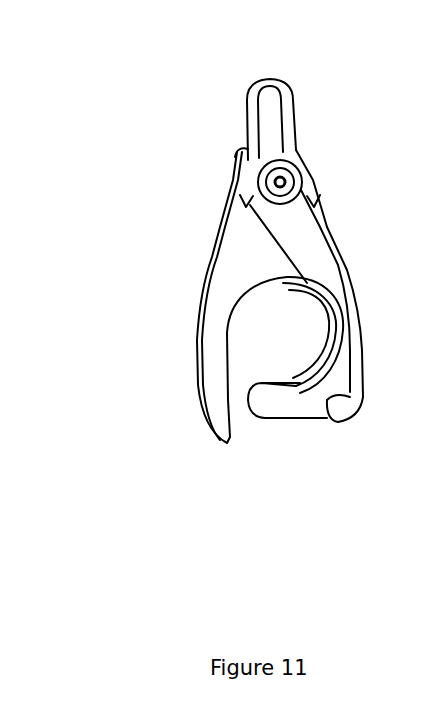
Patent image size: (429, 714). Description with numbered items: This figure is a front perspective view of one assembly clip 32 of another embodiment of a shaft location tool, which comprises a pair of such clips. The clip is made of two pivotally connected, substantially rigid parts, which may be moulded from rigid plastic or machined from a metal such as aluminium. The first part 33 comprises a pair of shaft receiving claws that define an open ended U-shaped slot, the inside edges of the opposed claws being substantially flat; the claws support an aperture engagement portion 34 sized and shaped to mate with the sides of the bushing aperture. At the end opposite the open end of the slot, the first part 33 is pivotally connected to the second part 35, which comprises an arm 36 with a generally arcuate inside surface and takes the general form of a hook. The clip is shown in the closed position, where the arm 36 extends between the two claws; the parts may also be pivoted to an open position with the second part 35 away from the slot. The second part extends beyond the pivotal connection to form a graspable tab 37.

The assembly clip 32 is at (198, 148).
The first part 33 is at (215, 378).
The aperture engagement portion 34 is at (203, 265).
The second part 35 is at (311, 257).
The arm 36 is at (288, 402).
The graspable tab 37 is at (277, 97).